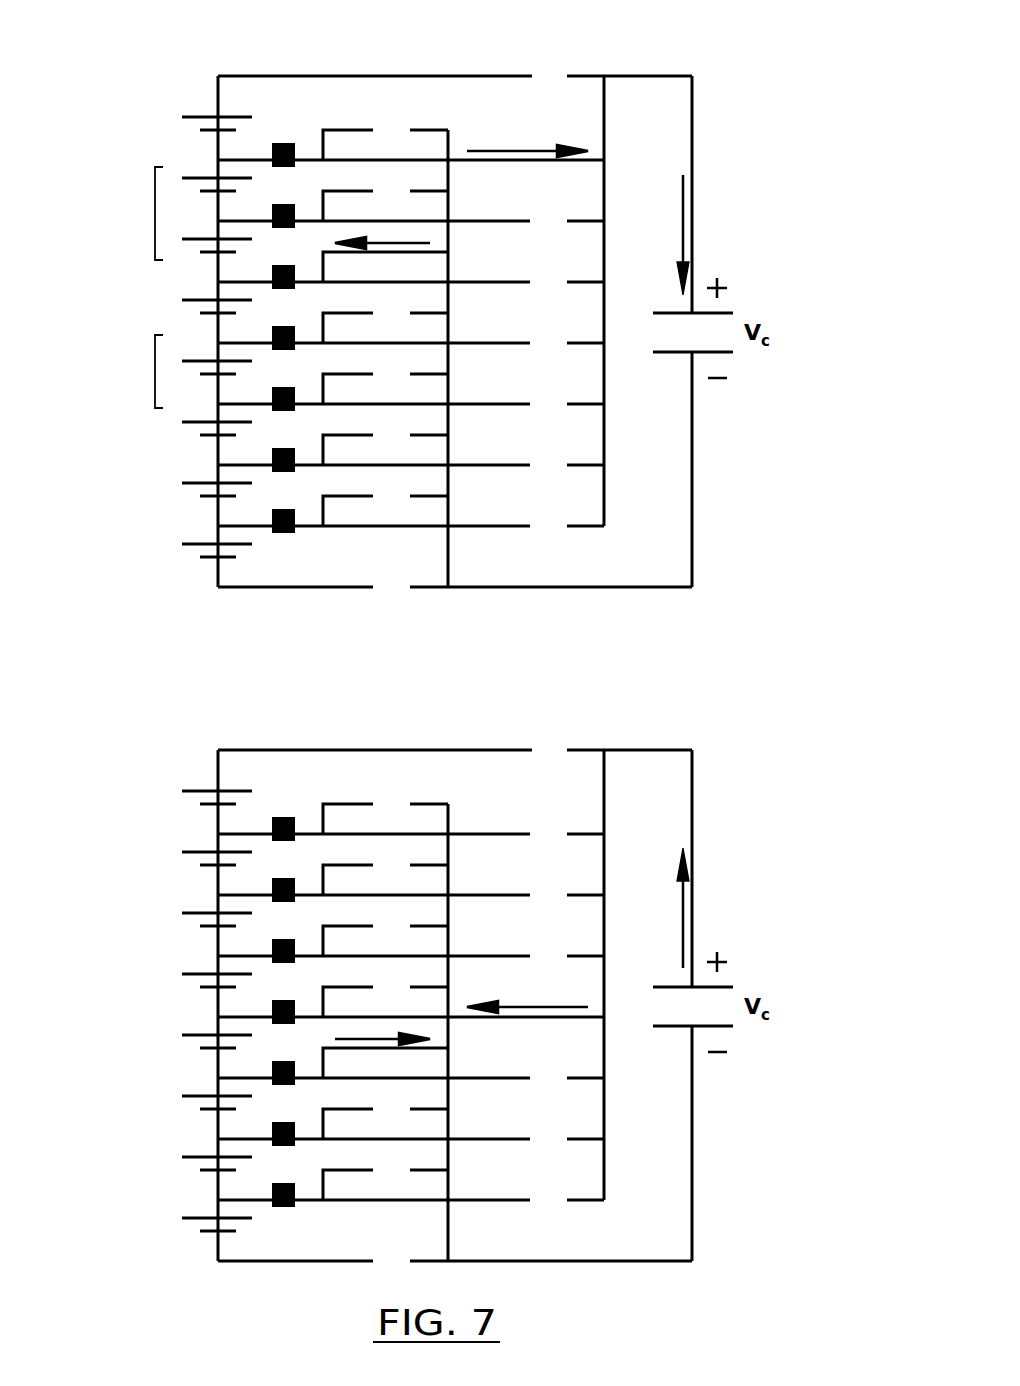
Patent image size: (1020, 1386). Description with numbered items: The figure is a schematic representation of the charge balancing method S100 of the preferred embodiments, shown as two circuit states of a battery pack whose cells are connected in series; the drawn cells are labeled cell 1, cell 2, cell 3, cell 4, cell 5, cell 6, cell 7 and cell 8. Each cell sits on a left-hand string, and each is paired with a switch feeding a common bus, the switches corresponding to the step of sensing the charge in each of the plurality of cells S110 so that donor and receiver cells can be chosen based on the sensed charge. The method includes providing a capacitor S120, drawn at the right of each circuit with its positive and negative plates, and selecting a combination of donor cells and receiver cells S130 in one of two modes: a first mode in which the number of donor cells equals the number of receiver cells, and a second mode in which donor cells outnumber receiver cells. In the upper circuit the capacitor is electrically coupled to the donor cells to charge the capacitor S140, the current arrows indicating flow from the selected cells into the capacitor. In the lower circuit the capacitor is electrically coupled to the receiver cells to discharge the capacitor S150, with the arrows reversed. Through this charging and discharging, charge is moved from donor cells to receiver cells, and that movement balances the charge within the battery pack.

The method for balancing charge S100 is at (150, 67).
The sensing the charge in each of the plurality of cells S110 is at (278, 143).
The providing a capacitor S120 is at (782, 370).
The selecting a combination of donor cells and receiver cells S130 is at (155, 372).
The electrically coupling the capacitor to the donor cells S140 is at (686, 222).
The electrically coupling the capacitor to the receiver cells S150 is at (686, 903).
The battery cell 1 is at (206, 889).
The battery cell 2 is at (206, 828).
The battery cell 3 is at (206, 767).
The battery cell 4 is at (206, 706).
The battery cell 5 is at (206, 645).
The battery cell 6 is at (206, 584).
The battery cell 7 is at (206, 523).
The battery cell 8 is at (206, 462).